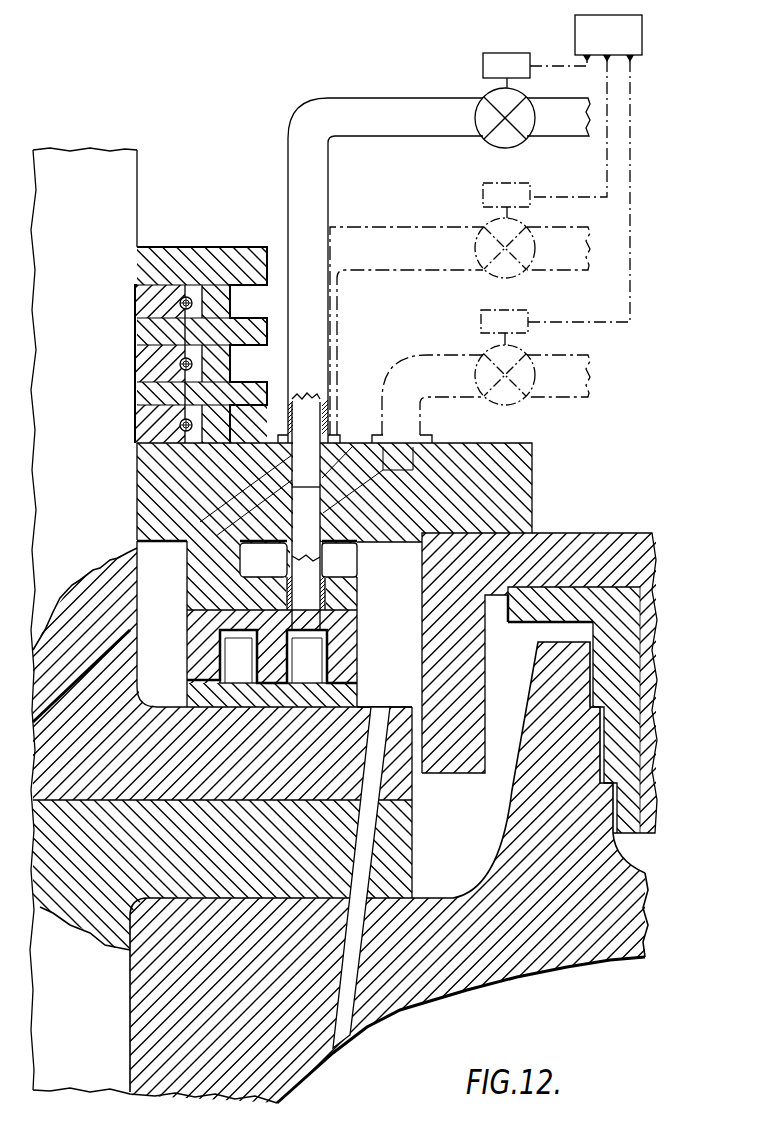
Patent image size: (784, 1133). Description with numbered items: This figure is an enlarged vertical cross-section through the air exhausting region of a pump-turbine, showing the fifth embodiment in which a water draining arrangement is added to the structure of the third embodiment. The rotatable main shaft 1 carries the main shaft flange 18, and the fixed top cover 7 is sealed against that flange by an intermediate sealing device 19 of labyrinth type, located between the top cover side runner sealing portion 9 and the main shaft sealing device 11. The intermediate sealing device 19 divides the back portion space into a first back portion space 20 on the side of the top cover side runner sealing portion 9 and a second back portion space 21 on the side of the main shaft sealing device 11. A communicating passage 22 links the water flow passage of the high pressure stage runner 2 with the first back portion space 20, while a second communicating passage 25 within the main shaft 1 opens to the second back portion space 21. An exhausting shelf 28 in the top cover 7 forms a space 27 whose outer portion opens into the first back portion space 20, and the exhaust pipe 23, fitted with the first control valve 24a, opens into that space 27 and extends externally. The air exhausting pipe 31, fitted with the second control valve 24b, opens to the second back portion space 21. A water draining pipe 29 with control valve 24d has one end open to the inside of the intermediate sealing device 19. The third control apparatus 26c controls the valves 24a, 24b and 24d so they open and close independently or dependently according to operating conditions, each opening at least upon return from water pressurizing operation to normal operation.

The main shaft 1 is at (83, 158).
The high pressure stage runner 2 is at (425, 965).
The top cover 7 is at (508, 523).
The top cover side runner sealing portion 9 is at (594, 683).
The main shaft sealing device 11 is at (208, 265).
The main shaft flange 18 is at (423, 787).
The intermediate sealing device 19 is at (197, 660).
The first back portion space 20 is at (407, 635).
The second back portion space 21 is at (150, 583).
The communicating passage 22 is at (347, 997).
The exhaust pipe 23 is at (405, 378).
The first control valve 24a is at (490, 355).
The second control valve 24b is at (482, 228).
The control valve 24d is at (497, 97).
The communicating passage 25 is at (113, 653).
The third control apparatus 26c is at (582, 30).
The space 27 is at (338, 554).
The exhausting shelf 28 is at (222, 563).
The water draining pipe 29 is at (325, 107).
The air exhausting pipe 31 is at (392, 240).